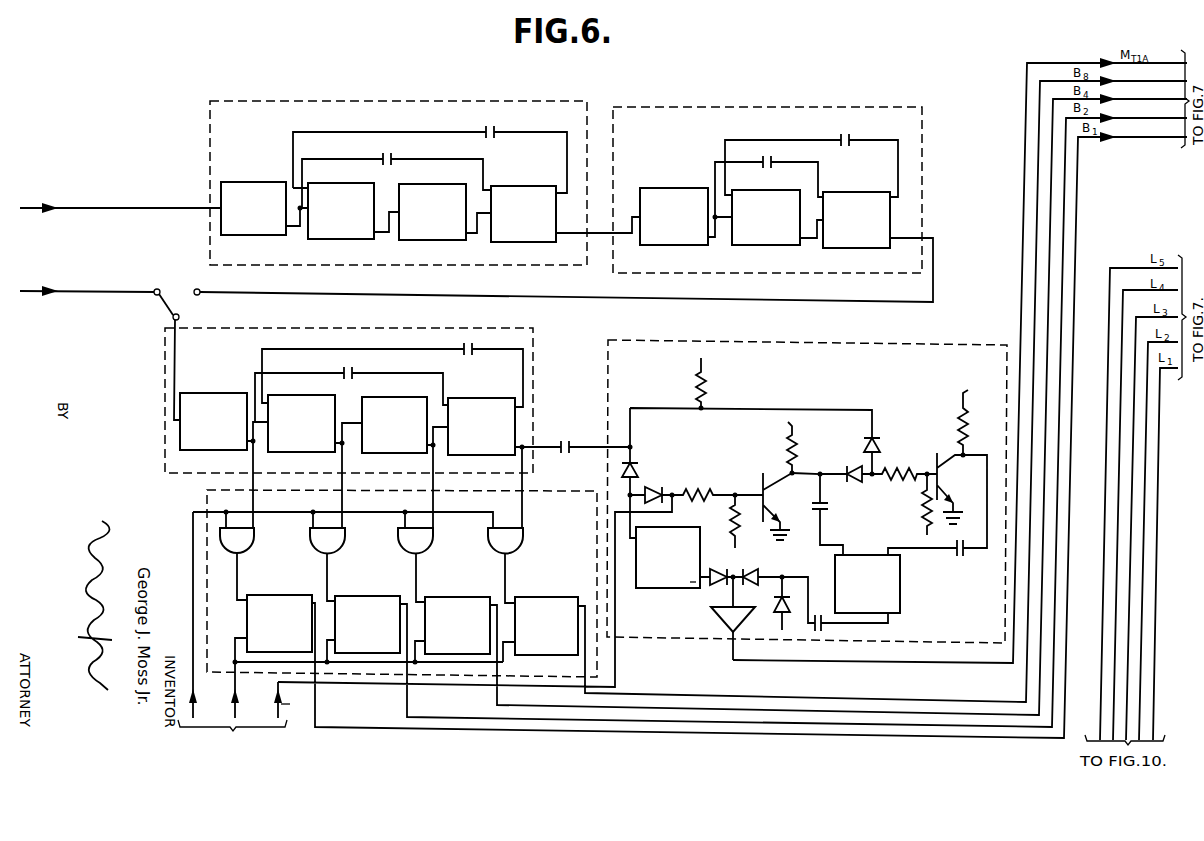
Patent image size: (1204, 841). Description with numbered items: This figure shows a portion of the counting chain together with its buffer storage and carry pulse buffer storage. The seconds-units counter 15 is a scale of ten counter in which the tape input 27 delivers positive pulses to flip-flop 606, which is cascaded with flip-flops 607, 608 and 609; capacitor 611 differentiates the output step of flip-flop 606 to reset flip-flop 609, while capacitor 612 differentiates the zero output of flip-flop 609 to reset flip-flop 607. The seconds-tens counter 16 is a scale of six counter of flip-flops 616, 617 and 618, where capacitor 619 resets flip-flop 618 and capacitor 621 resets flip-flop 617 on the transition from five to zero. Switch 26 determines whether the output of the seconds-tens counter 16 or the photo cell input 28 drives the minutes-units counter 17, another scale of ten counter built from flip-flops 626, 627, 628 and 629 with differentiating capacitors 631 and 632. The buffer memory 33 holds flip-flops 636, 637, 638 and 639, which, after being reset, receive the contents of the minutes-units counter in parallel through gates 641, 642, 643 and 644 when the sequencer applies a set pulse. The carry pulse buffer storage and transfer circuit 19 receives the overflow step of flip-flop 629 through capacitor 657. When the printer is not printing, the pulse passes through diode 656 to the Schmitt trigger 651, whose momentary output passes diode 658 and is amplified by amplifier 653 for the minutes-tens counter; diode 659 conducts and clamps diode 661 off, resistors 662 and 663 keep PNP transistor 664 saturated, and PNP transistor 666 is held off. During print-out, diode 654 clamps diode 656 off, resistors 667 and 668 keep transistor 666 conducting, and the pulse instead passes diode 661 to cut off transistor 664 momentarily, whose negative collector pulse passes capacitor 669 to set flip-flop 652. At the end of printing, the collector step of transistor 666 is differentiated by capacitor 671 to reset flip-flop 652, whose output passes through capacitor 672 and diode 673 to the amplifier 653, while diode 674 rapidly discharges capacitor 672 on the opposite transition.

The seconds-units counter 15 is at (386, 101).
The seconds-tens counter 16 is at (748, 107).
The minutes-units counter 17 is at (300, 330).
The carry pulse buffer storage and transfer circuit 19 is at (767, 340).
The buffer memory 33 is at (555, 498).
The switch 26 is at (163, 298).
The tape input 27 is at (102, 210).
The photo cell input 28 is at (72, 293).
The flip-flop 606 is at (264, 178).
The flip-flop 607 is at (355, 180).
The flip-flop 608 is at (425, 182).
The flip-flop 609 is at (540, 183).
The capacitor 611 is at (392, 158).
The capacitor 612 is at (485, 133).
The flip-flop 616 is at (682, 184).
The flip-flop 617 is at (771, 186).
The flip-flop 618 is at (857, 189).
The capacitor 619 is at (773, 163).
The capacitor 621 is at (840, 139).
The flip-flop 626 is at (222, 392).
The flip-flop 627 is at (312, 393).
The flip-flop 628 is at (387, 395).
The flip-flop 629 is at (475, 397).
The capacitor 631 is at (343, 373).
The capacitor 632 is at (465, 352).
The flip-flop 636 is at (292, 593).
The flip-flop 637 is at (379, 594).
The flip-flop 638 is at (469, 595).
The flip-flop 639 is at (559, 595).
The gate 641 is at (247, 537).
The gate 642 is at (338, 537).
The gate 643 is at (428, 537).
The gate 644 is at (516, 537).
The Schmitt trigger 651 is at (650, 589).
The flip-flop 652 is at (898, 586).
The amplifier 653 is at (724, 616).
The diode 654 is at (652, 490).
The diode 656 is at (648, 460).
The capacitor 657 is at (570, 443).
The diode 658 is at (716, 585).
The diode 659 is at (855, 467).
The diode 661 is at (880, 447).
The resistor 662 is at (898, 471).
The resistor 663 is at (923, 512).
The PNP transistor 664 is at (940, 470).
The PNP transistor 666 is at (770, 493).
The resistor 667 is at (730, 530).
The resistor 668 is at (704, 494).
The capacitor 669 is at (970, 552).
The capacitor 671 is at (826, 512).
The capacitor 672 is at (824, 625).
The diode 673 is at (759, 572).
The diode 674 is at (774, 606).